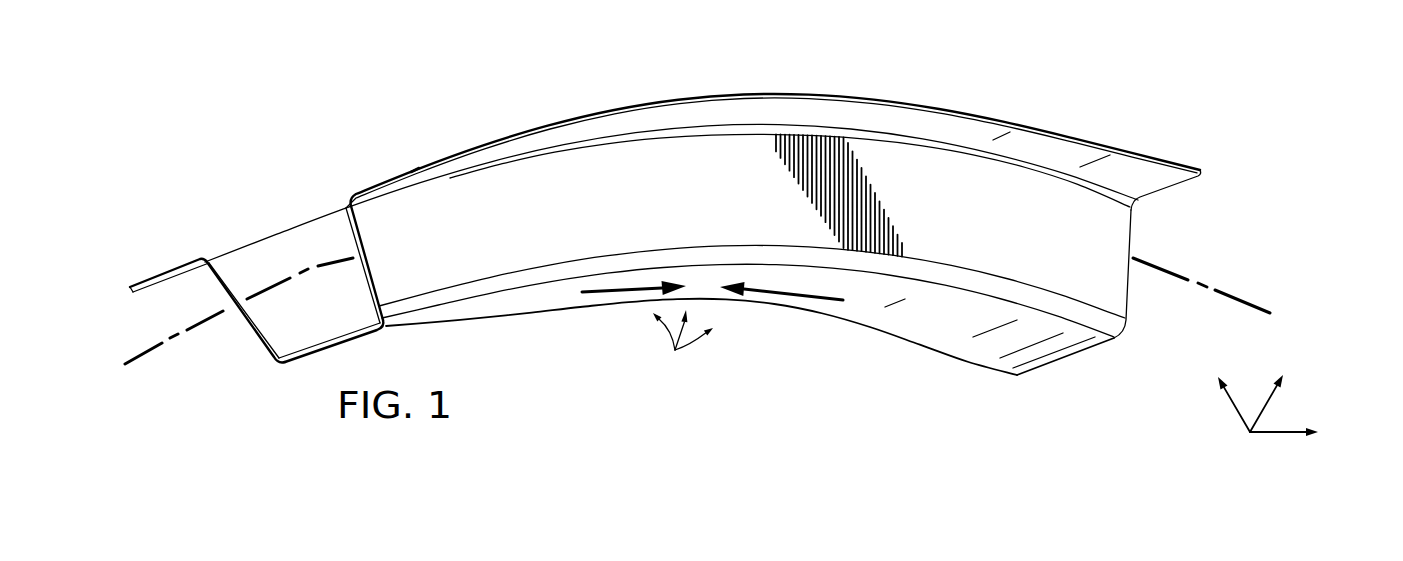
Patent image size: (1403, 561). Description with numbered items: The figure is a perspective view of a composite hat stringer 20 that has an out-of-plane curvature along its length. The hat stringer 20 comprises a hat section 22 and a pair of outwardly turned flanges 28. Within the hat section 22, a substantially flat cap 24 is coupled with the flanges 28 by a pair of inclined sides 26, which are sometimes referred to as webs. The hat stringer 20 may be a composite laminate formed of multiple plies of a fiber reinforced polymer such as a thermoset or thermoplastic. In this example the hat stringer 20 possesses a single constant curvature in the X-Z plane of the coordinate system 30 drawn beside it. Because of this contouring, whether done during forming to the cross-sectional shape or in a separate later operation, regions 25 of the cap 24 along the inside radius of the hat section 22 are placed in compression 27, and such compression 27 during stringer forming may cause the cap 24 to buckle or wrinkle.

The hat stringer 20 is at (693, 296).
The hat section 22 is at (378, 234).
The cap 24 is at (1068, 360).
The regions 25 is at (683, 347).
The inclined sides 26 is at (373, 267).
The compression 27 is at (778, 294).
The outwardly turned flanges 28 is at (385, 181).
The coordinate system 30 is at (1343, 364).